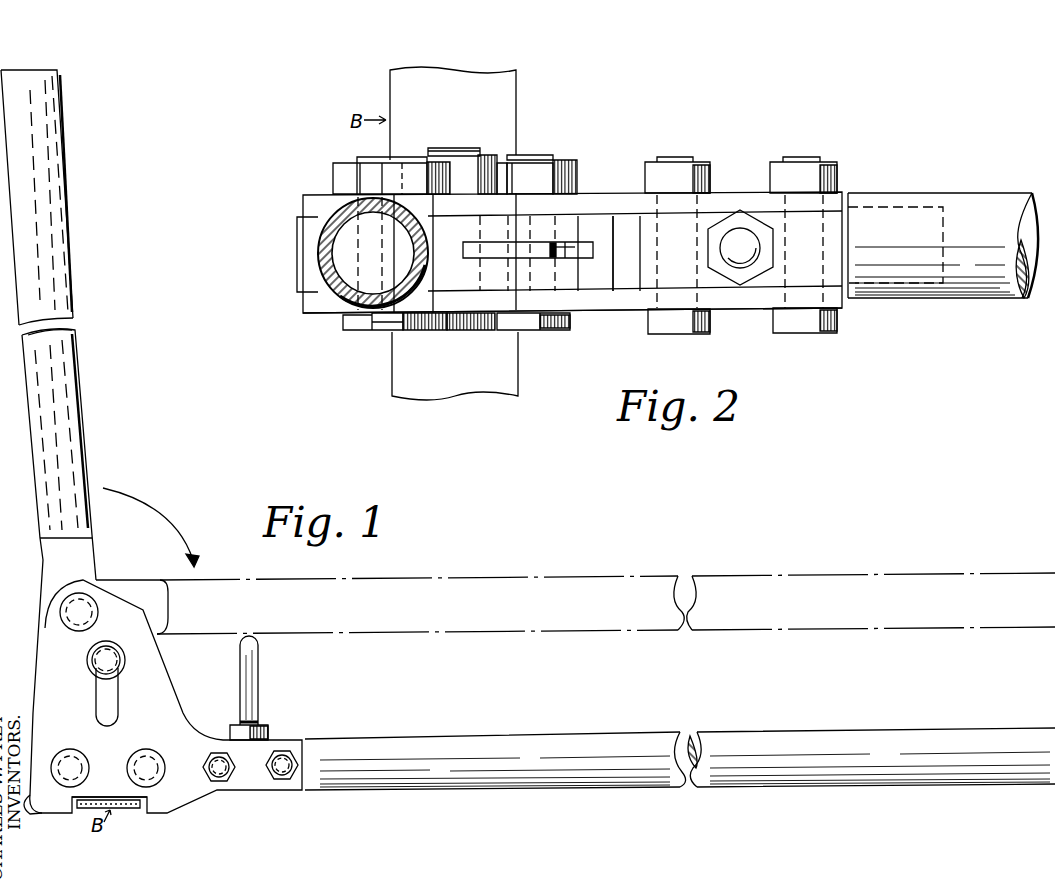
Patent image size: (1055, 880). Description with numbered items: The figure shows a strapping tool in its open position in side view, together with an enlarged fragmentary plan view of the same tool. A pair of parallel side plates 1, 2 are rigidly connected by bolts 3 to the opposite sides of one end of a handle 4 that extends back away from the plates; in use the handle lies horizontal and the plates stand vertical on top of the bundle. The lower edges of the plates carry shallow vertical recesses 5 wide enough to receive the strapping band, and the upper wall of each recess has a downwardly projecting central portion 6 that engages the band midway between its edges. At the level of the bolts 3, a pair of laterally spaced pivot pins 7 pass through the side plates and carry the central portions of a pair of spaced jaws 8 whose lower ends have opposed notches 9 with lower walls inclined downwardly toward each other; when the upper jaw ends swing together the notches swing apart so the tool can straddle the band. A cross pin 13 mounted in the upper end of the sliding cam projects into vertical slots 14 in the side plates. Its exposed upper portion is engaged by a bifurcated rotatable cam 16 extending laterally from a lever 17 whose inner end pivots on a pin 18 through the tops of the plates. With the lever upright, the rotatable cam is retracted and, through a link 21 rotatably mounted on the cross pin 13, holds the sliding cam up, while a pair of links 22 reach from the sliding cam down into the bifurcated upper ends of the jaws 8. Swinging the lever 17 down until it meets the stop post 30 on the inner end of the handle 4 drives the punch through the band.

In FIG. 2, the side plate 1 is at (596, 309).
In FIG. 1, the side plate 1 is at (186, 712).
In FIG. 2, the side plate 2 is at (604, 195).
In FIG. 2, the bolts 3 is at (778, 336).
In FIG. 1, the bolts 3 is at (266, 770).
In FIG. 2, the handle 4 is at (958, 294).
In FIG. 1, the handle 4 is at (712, 730).
In FIG. 1, the vertical recesses 5 is at (76, 815).
In FIG. 1, the downwardly projecting central portion 6 is at (108, 797).
In FIG. 2, the pivot pins 7 is at (355, 331).
In FIG. 1, the pivot pins 7 is at (134, 752).
In FIG. 2, the jaws 8 is at (608, 250).
In FIG. 1, the jaws 8 is at (42, 800).
In FIG. 2, the opposed notches 9 is at (578, 252).
In FIG. 2, the cross pin 13 is at (472, 331).
In FIG. 1, the cross pin 13 is at (118, 658).
In FIG. 1, the vertical slots 14 is at (115, 694).
In FIG. 2, the bifurcated rotatable cam 16 is at (570, 276).
In FIG. 1, the bifurcated rotatable cam 16 is at (166, 605).
In FIG. 2, the lever 17 is at (303, 259).
In FIG. 1, the lever 17 is at (70, 330).
In FIG. 2, the pin 18 is at (384, 331).
In FIG. 1, the pin 18 is at (82, 632).
In FIG. 2, the link 21 is at (490, 251).
In FIG. 2, the links 22 is at (556, 250).
In FIG. 2, the stop post 30 is at (748, 248).
In FIG. 1, the stop post 30 is at (256, 686).